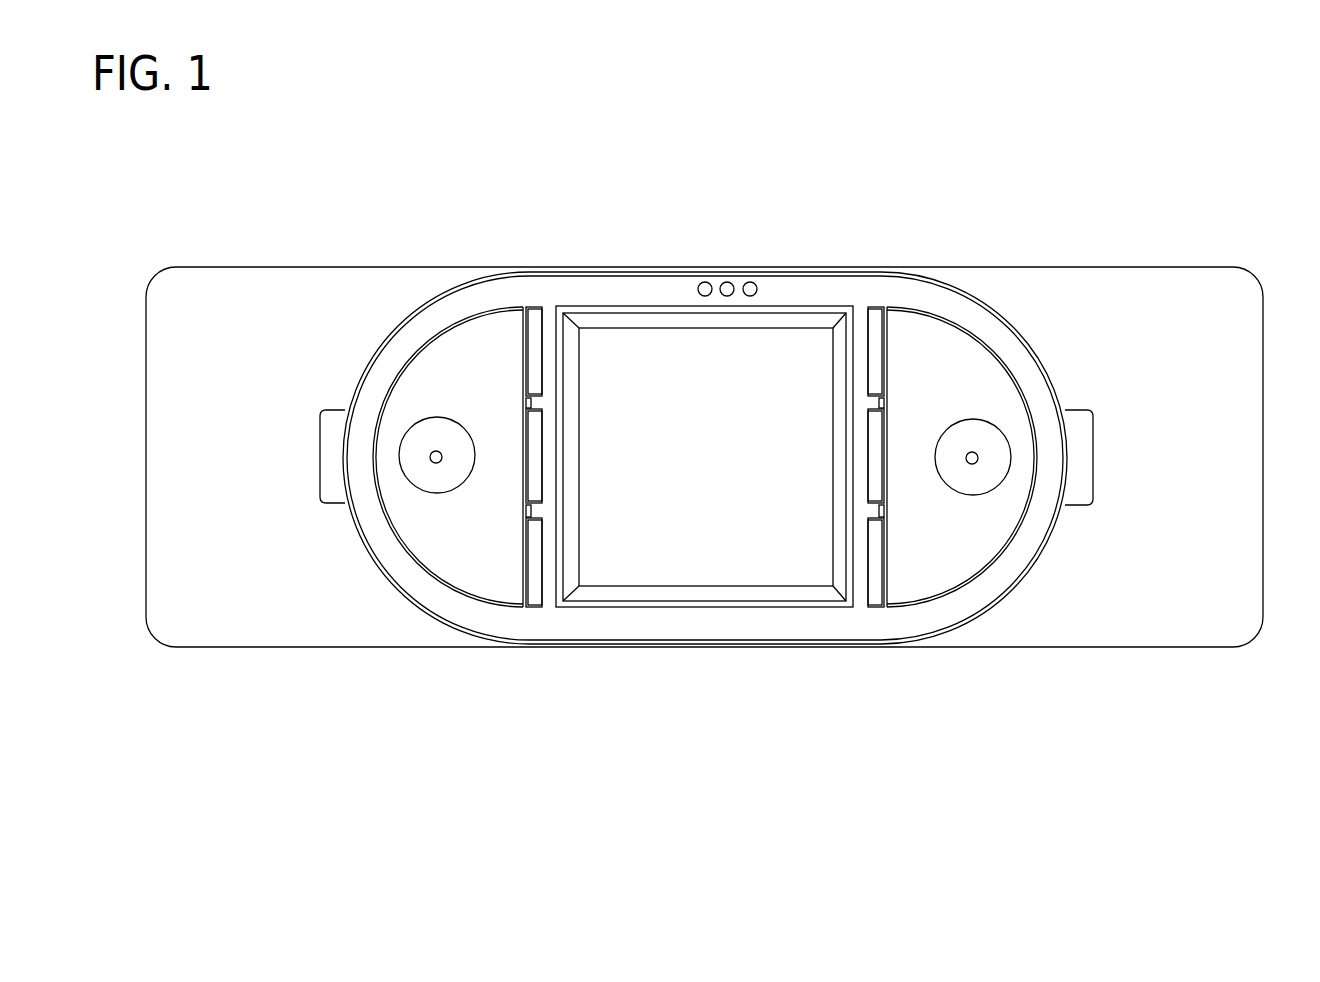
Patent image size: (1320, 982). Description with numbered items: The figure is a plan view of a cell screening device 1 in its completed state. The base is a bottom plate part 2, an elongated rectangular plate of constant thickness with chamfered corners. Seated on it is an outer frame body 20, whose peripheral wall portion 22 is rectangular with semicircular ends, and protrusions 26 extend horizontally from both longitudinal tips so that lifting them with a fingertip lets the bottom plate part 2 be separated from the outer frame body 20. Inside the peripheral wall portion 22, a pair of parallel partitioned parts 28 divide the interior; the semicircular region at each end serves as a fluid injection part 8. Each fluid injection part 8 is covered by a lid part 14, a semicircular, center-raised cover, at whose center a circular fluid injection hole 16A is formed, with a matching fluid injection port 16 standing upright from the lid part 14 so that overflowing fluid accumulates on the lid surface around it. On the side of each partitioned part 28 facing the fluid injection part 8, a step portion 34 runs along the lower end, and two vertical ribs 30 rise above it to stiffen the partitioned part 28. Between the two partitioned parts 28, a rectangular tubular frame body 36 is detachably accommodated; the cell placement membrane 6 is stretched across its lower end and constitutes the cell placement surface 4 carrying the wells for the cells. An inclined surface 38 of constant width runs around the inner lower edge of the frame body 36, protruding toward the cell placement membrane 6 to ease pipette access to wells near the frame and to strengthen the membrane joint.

The cell screening device 1 is at (1160, 161).
The bottom plate part 2 is at (1205, 267).
The cell placement surface 4 is at (672, 353).
The cell placement membrane 6 is at (726, 356).
The fluid injection part 8 is at (461, 365).
The lid part 14 is at (455, 557).
The fluid injection port 16 is at (412, 428).
The fluid injection hole 16A is at (442, 461).
The outer frame body 20 is at (1053, 533).
The peripheral wall portion 22 is at (807, 292).
The protrusion 26 is at (318, 457).
The partitioned part 28 is at (541, 353).
The rib 30 is at (523, 403).
The step portion 34 is at (523, 473).
The frame body 36 is at (602, 308).
The inclined surface 38 is at (635, 322).